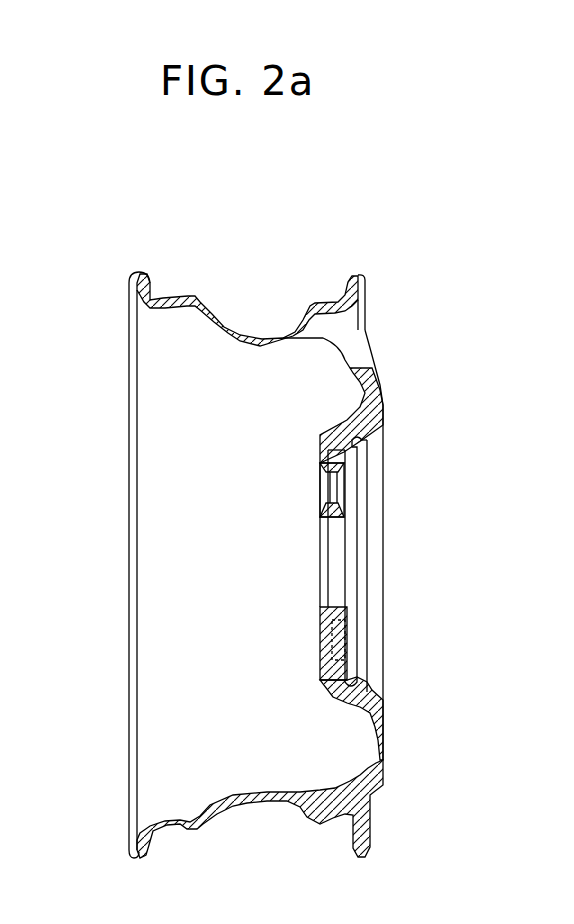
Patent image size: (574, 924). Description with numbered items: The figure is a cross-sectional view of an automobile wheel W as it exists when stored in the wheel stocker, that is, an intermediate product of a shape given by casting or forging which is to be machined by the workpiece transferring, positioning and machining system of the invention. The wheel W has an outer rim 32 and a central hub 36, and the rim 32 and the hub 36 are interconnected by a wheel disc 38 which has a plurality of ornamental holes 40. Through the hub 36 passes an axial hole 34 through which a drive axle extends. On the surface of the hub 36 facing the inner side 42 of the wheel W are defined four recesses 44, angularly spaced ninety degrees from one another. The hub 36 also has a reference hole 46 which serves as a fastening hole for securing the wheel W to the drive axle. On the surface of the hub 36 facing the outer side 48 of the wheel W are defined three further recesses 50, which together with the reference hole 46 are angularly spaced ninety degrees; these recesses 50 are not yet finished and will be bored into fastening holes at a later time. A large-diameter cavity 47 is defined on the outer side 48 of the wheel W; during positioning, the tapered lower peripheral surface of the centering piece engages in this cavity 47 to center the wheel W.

The wheel W is at (140, 256).
The outer rim 32 is at (210, 313).
The axial hole 34 is at (332, 562).
The hub 36 is at (343, 672).
The wheel disc 38 is at (375, 398).
The ornamental holes 40 is at (352, 336).
The inner side 42 is at (118, 520).
The recesses 44 is at (330, 645).
The reference hole 46 is at (322, 490).
The large-diameter cavity 47 is at (375, 490).
The outer side 48 is at (412, 454).
The recesses 50 is at (345, 632).